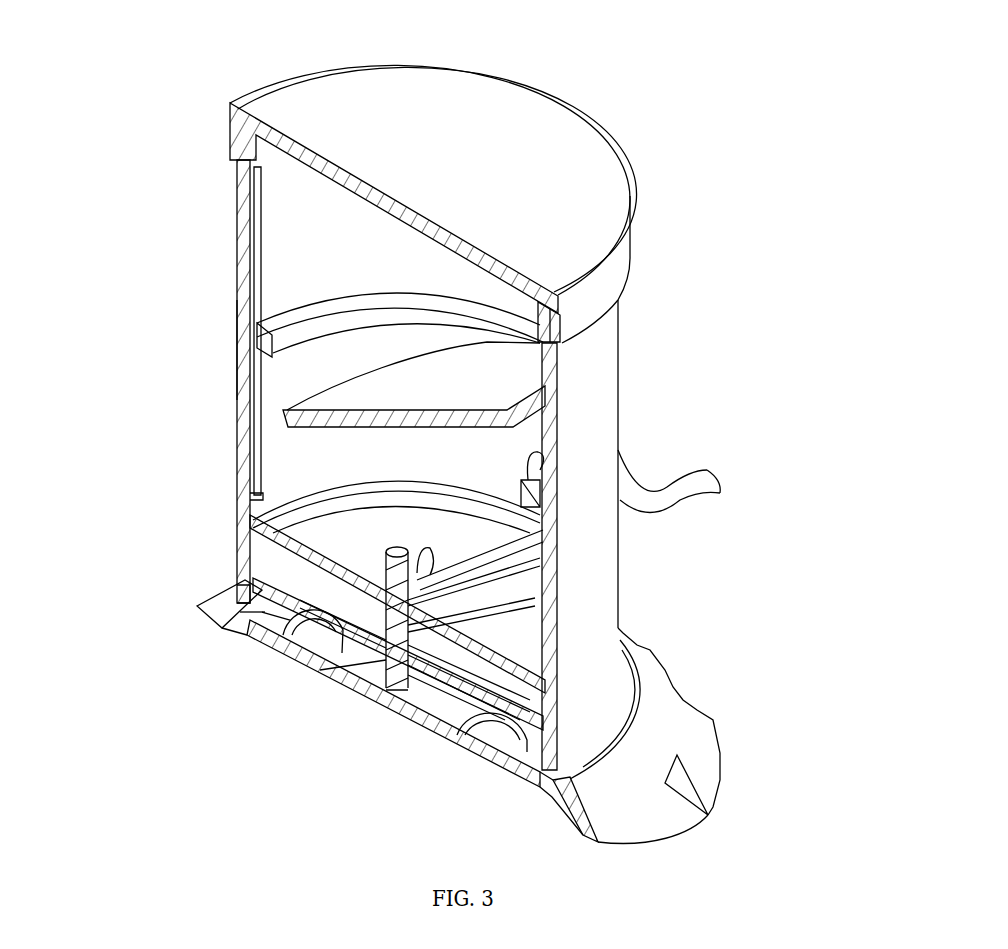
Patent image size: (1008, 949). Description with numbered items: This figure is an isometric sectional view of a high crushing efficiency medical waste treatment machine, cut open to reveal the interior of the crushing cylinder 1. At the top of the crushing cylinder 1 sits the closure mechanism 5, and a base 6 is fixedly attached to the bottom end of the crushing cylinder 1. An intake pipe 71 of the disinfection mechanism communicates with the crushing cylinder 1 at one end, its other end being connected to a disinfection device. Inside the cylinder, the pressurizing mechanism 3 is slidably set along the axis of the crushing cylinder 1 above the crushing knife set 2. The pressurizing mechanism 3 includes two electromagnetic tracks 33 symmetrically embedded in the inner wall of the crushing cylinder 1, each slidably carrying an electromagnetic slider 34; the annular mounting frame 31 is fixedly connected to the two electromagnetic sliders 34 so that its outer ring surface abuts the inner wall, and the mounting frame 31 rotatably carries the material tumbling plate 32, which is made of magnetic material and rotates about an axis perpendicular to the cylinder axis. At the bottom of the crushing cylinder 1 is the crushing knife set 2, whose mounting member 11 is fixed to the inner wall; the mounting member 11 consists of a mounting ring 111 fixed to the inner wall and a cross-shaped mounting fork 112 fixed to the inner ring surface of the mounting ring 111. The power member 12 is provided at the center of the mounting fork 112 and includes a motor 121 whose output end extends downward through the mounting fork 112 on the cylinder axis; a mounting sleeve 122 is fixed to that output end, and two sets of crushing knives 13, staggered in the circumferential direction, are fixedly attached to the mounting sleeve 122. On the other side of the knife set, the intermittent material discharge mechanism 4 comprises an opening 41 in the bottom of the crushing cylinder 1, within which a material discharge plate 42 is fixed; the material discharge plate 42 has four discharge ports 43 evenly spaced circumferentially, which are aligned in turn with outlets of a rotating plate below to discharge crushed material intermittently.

The crushing cylinder 1 is at (240, 143).
The crushing knife set 2 is at (280, 540).
The pressurizing mechanism 3 is at (80, 101).
The mounting frame 31 is at (245, 238).
The material tumbling plate 32 is at (358, 370).
The electromagnetic track 33 is at (330, 291).
The electromagnetic slider 34 is at (246, 318).
The intermittent material discharge mechanism 4 is at (78, 572).
The opening 41 is at (250, 604).
The material discharge plate 42 is at (262, 613).
The discharge port 43 is at (290, 620).
The closure mechanism 5 is at (585, 190).
The base 6 is at (645, 773).
The mounting member 11 is at (836, 352).
The mounting ring 111 is at (537, 510).
The mounting fork 112 is at (513, 543).
The power member 12 is at (838, 525).
The motor 121 is at (430, 578).
The mounting sleeve 122 is at (455, 600).
The crushing knives 13 is at (540, 690).
The intake pipe 71 is at (703, 490).